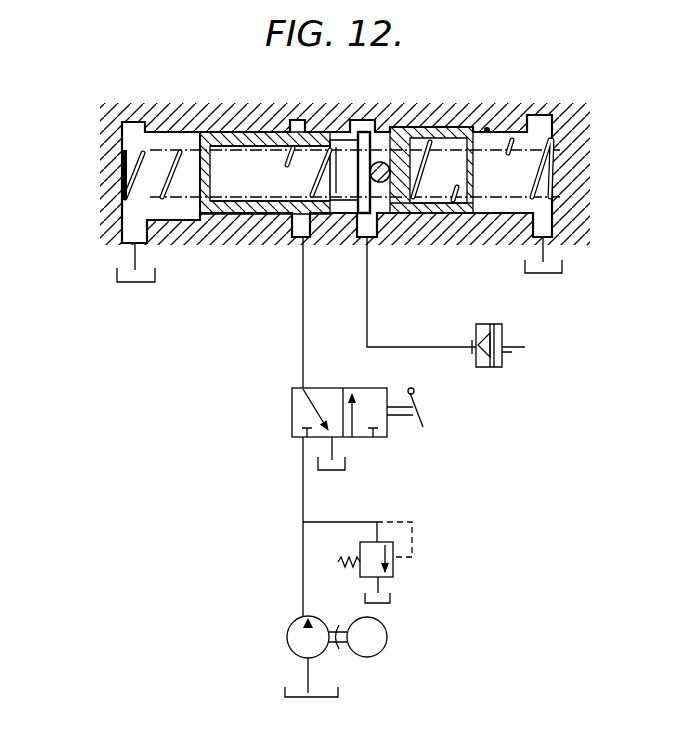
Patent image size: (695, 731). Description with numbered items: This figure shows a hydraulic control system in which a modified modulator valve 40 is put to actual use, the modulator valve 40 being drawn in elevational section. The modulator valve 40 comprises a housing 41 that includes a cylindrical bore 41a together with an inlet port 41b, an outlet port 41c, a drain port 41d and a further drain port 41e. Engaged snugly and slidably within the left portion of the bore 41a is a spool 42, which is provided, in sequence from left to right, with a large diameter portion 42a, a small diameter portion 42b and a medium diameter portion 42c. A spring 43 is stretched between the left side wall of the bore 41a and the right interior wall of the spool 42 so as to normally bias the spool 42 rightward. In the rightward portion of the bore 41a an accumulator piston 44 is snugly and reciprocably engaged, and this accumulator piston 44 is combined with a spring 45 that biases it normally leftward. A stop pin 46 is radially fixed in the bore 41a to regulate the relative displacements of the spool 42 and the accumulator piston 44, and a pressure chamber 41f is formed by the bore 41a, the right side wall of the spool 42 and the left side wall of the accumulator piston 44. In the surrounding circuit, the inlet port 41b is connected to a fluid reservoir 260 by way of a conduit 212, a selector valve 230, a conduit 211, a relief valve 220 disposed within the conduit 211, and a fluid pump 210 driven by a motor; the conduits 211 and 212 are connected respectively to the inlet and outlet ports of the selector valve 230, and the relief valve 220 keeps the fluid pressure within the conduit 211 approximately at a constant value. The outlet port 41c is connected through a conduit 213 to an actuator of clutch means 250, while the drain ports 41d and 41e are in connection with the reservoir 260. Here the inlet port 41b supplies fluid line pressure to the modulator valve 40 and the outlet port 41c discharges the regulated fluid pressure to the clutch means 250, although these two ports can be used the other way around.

The modulator valve 40 is at (425, 82).
The housing 41 is at (470, 124).
The cylindrical bore 41a is at (488, 128).
The inlet port 41b is at (292, 234).
The outlet port 41c is at (307, 243).
The drain port 41d is at (553, 223).
The drain port 41e is at (135, 232).
The port 41f is at (366, 240).
The spool 42 is at (228, 138).
The large diameter portion 42a is at (212, 132).
The small diameter portion 42b is at (330, 137).
The medium diameter portion 42c is at (364, 130).
The spring 43 is at (121, 168).
The accumulator piston 44 is at (441, 210).
The spring 45 is at (512, 150).
The stop pin 46 is at (385, 183).
The fluid pump 210 is at (285, 632).
The conduit 211 is at (303, 490).
The conduit 212 is at (303, 322).
The conduit 213 is at (417, 347).
The relief valve 220 is at (418, 532).
The selector valve 230 is at (290, 412).
The clutch means 250 is at (512, 336).
The fluid reservoir 260 is at (328, 697).